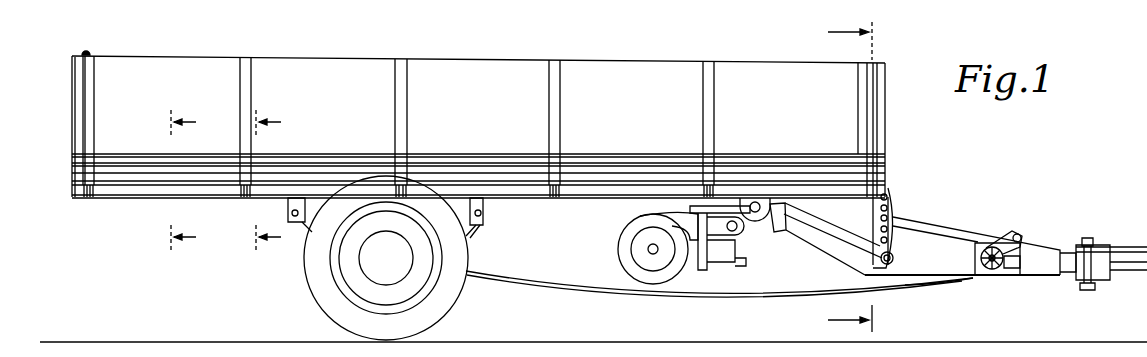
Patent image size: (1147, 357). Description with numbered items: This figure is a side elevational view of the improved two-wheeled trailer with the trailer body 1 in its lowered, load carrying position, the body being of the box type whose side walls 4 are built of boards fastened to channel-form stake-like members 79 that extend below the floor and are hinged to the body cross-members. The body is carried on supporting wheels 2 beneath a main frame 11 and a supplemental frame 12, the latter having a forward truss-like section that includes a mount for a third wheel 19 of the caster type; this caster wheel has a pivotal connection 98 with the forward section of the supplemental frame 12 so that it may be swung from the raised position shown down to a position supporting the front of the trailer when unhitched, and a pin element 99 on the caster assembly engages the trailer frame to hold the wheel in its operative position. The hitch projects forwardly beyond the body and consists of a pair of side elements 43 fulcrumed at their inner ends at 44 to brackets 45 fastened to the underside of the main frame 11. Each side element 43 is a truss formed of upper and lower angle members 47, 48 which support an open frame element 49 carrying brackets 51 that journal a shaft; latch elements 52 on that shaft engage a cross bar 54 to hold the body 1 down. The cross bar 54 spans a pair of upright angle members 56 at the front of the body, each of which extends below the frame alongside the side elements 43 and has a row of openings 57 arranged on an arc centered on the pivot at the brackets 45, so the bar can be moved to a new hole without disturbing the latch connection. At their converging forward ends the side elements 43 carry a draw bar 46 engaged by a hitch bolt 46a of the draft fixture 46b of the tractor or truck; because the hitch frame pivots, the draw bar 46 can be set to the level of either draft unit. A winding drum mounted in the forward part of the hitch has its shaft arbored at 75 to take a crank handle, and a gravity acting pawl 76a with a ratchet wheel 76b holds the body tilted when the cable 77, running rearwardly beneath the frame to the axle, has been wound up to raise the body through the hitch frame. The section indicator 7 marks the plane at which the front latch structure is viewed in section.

The trailer body 1 is at (637, 57).
The supporting wheel 2 is at (318, 306).
The side wall 4 is at (440, 77).
The section line 7- 7 is at (858, 177).
The main frame 11 is at (268, 175).
The supplemental frame 12 is at (168, 180).
The third wheel 19 is at (620, 250).
The side element 43 is at (951, 236).
The fulcrum 44 is at (757, 200).
The bracket 45 is at (757, 216).
The draw bar 46 is at (1066, 254).
The hitch bolt 46a is at (1083, 288).
The draft fixture 46b is at (1110, 243).
The upper angle member 47 is at (927, 229).
The lower angle member 48 is at (927, 282).
The open frame element 49 is at (868, 257).
The bracket 51 is at (893, 258).
The latch element 52 is at (893, 207).
The cross bar 54 is at (888, 218).
The angle member 56 is at (885, 133).
The opening 57 is at (887, 197).
The arbored end 75 is at (991, 262).
The gravity acting pawl 76a is at (1010, 233).
The ratchet wheel 76b is at (1011, 270).
The cable 77 is at (545, 289).
The stake-like member 79 is at (562, 127).
The pivotal connection 98 is at (732, 226).
The pin element 99 is at (738, 266).